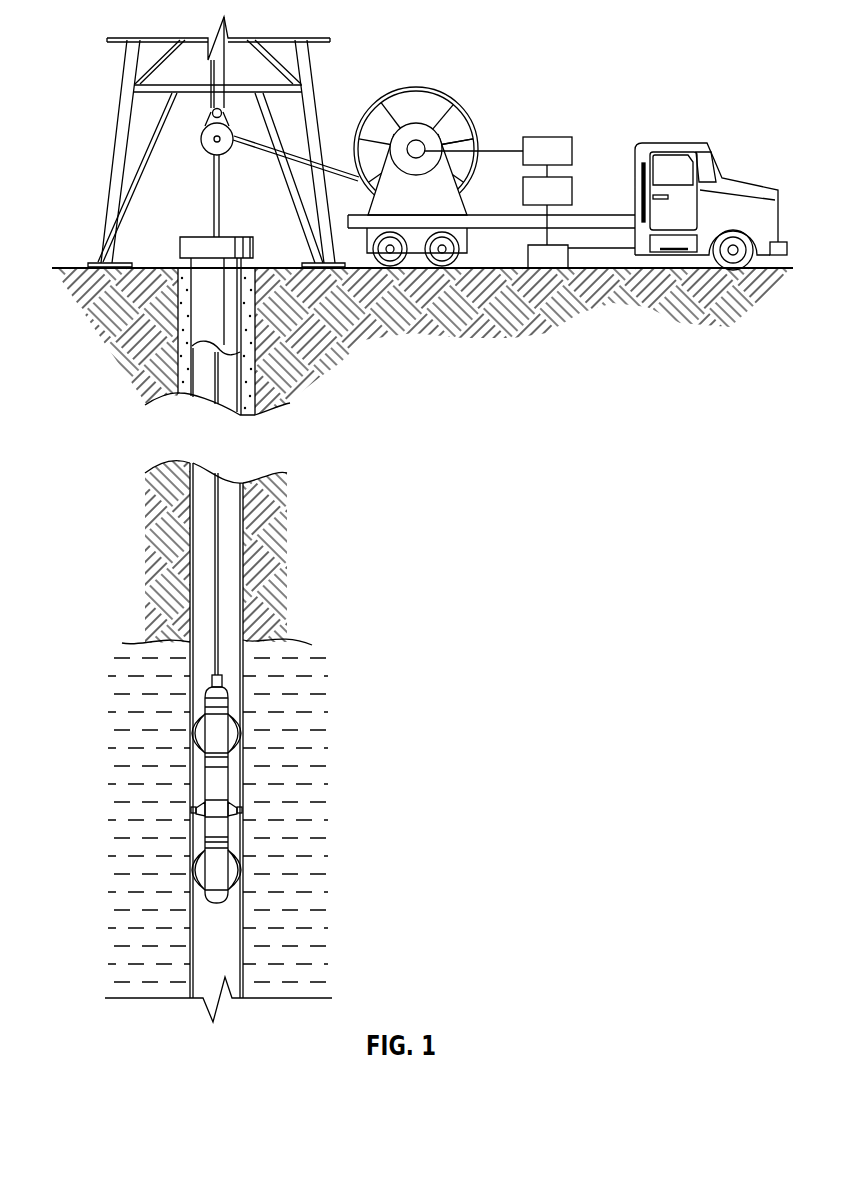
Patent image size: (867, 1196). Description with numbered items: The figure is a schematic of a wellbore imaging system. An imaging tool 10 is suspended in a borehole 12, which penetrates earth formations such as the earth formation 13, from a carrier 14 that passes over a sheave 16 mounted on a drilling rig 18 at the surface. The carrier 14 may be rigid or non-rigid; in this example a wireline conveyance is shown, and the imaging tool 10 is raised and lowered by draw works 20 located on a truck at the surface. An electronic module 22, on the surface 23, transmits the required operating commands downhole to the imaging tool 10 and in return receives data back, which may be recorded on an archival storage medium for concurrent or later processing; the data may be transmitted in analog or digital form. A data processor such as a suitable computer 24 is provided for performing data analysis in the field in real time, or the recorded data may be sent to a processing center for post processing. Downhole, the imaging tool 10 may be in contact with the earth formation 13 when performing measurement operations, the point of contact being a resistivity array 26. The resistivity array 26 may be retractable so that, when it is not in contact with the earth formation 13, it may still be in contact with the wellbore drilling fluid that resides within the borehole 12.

The imaging tool 10 is at (224, 777).
The borehole 12 is at (190, 578).
The earth formation 13 is at (270, 557).
The carrier 14 is at (213, 203).
The sheave 16 is at (201, 140).
The drilling rig 18 is at (114, 117).
The draw works 20 is at (417, 87).
The electronic module 22 is at (574, 150).
The surface 23 is at (75, 268).
The computer 24 is at (574, 190).
The resistivity array 26 is at (192, 810).